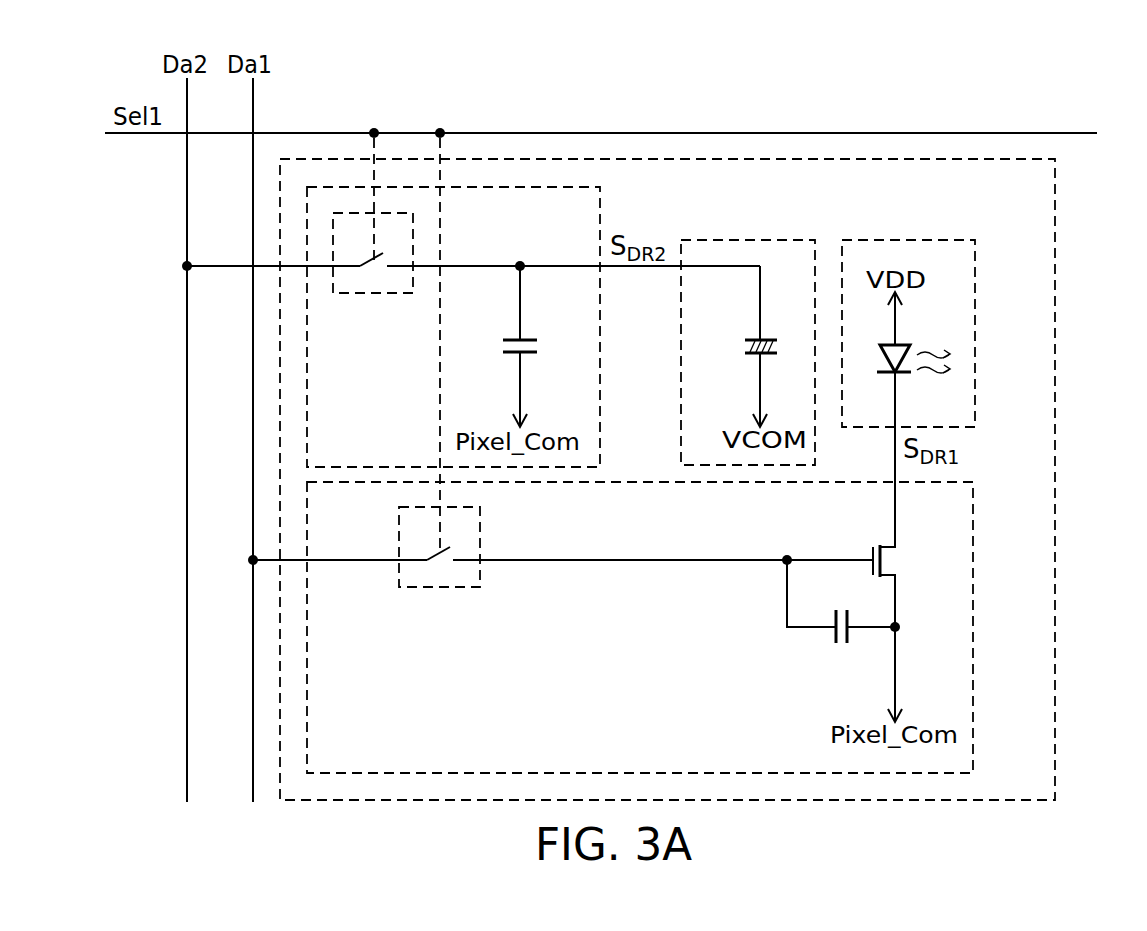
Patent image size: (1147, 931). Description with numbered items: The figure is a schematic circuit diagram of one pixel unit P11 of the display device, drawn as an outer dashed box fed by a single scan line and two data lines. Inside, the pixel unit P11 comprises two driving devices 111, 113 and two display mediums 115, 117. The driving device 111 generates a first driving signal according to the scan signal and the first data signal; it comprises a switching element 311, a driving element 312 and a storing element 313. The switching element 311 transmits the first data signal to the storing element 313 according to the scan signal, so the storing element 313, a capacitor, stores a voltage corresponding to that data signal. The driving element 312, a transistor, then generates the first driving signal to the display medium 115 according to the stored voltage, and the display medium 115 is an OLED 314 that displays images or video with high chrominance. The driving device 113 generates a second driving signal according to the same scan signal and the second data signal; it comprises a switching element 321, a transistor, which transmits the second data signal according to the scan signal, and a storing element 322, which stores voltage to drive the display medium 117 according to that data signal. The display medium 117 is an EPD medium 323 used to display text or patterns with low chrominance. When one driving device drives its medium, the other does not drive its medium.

The pixel unit P11 is at (1056, 481).
The driving device 111 is at (975, 626).
The driving device 113 is at (601, 206).
The display medium 115 is at (903, 238).
The display medium 117 is at (743, 238).
The switching element 311 is at (441, 589).
The driving element 312 is at (898, 562).
The storing element 313 is at (843, 648).
The OLED 314 is at (904, 350).
The switching element 321 is at (376, 295).
The storing element 322 is at (510, 341).
The EPD medium 323 is at (750, 341).